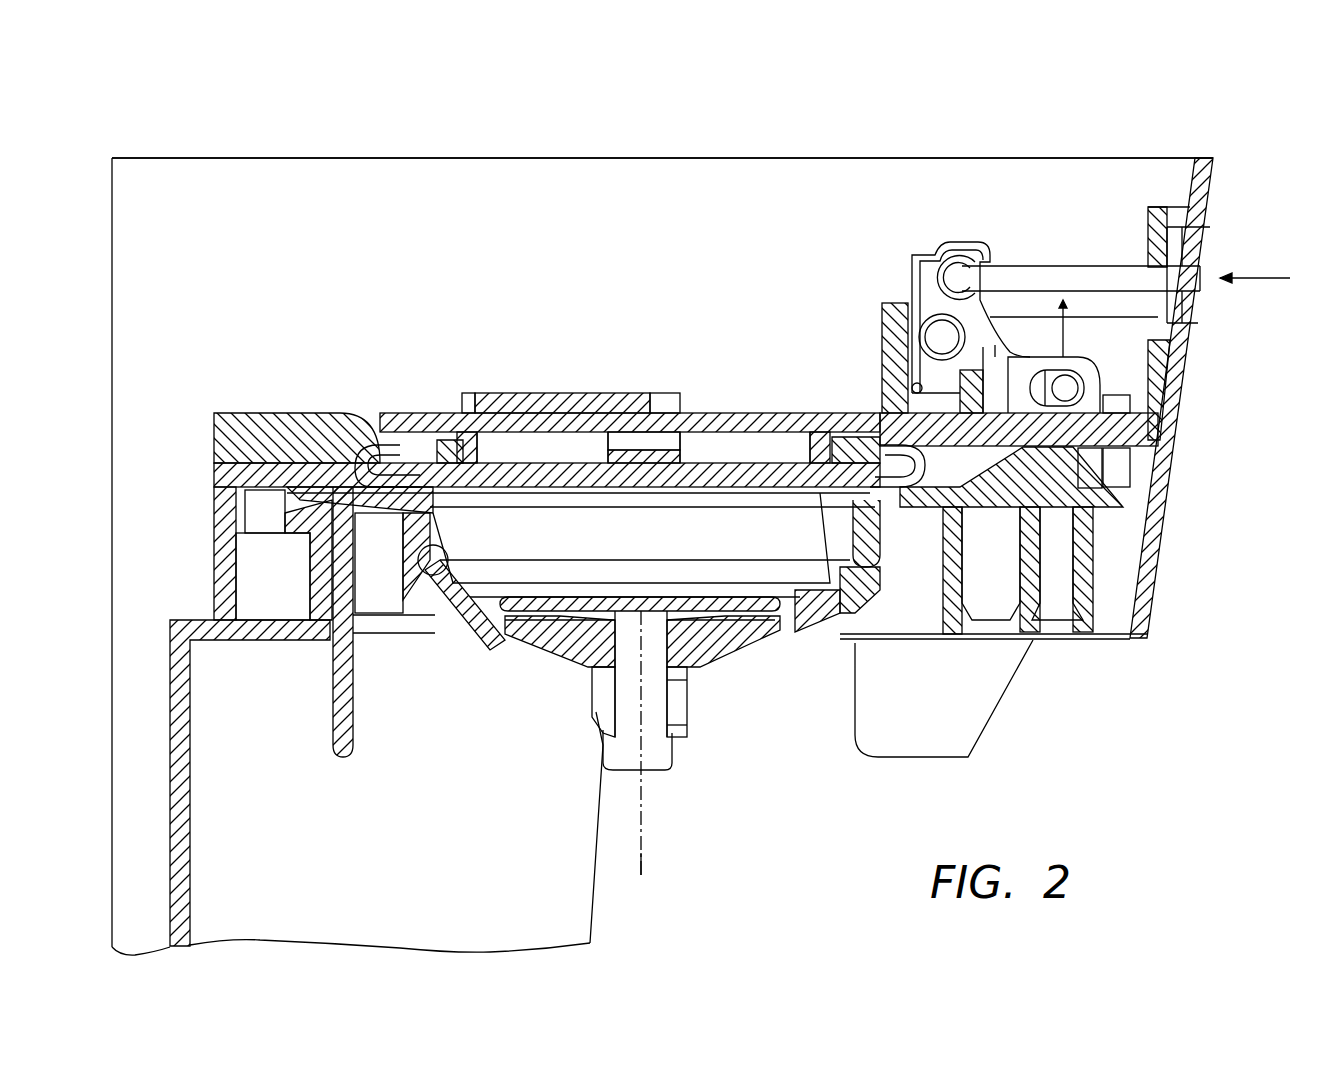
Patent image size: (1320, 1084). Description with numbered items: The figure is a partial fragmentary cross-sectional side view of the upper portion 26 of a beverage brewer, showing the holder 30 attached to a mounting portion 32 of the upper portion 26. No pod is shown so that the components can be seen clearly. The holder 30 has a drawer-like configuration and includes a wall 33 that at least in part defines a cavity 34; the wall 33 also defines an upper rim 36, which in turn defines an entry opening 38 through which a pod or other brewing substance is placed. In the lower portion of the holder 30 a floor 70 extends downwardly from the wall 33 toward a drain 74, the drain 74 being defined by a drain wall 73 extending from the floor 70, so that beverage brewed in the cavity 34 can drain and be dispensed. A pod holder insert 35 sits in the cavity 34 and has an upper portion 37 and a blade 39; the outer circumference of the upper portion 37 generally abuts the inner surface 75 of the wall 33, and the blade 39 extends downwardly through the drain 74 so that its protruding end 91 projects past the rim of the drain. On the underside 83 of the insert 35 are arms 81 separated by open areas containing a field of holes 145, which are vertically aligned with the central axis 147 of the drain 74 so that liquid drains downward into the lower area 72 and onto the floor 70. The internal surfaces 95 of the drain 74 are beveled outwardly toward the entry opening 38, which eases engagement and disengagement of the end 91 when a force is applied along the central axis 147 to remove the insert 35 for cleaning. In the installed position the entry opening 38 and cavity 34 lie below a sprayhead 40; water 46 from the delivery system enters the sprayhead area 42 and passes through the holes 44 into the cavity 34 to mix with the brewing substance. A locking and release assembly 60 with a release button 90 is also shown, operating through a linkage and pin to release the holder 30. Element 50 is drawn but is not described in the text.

The upper portion 26 is at (1218, 132).
The holder 30 is at (1158, 589).
The mounting portion 32 is at (975, 455).
The wall 33 is at (862, 567).
The cavity 34 is at (800, 600).
The pod holder insert 35 is at (530, 505).
The upper rim 36 is at (430, 503).
The upper portion 37 is at (430, 478).
The entry opening 38 is at (667, 513).
The blade 39 is at (668, 700).
The sprayhead 40 is at (845, 575).
The sprayhead area 42 is at (590, 447).
The holes 44 is at (565, 575).
The water 46 is at (641, 450).
The nut 50 is at (660, 705).
The locking and release assembly 60 is at (938, 206).
The floor 70 is at (572, 625).
The lower area 72 is at (723, 627).
The drain wall 73 is at (760, 612).
The drain 74 is at (657, 737).
The inner surface 75 is at (418, 575).
The arms 81 is at (677, 613).
The underside 83 is at (740, 690).
The release button 90 is at (1203, 297).
The protruding end 91 is at (650, 770).
The internal surfaces 95 is at (672, 745).
The holes 145 is at (706, 515).
The central axis 147 is at (641, 853).